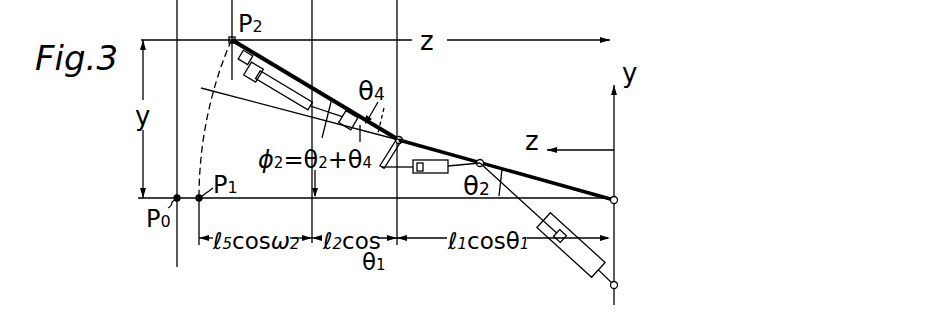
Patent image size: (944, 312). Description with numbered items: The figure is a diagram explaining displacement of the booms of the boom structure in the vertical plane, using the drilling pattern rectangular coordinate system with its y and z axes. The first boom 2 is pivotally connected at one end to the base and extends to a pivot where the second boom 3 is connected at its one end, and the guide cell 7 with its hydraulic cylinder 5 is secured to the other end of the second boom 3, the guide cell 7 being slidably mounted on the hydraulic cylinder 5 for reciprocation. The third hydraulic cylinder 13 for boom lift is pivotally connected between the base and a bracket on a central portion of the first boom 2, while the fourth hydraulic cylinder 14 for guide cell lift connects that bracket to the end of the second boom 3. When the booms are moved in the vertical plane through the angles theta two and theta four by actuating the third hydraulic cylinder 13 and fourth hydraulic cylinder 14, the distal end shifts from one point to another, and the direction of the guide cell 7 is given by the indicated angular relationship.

The first boom 2 is at (430, 148).
The second boom 3 is at (317, 92).
The guide cell 7 is at (306, 85).
The hydraulic cylinder 5 is at (273, 90).
The third hydraulic cylinder 13 is at (568, 256).
The fourth hydraulic cylinder 14 is at (432, 173).